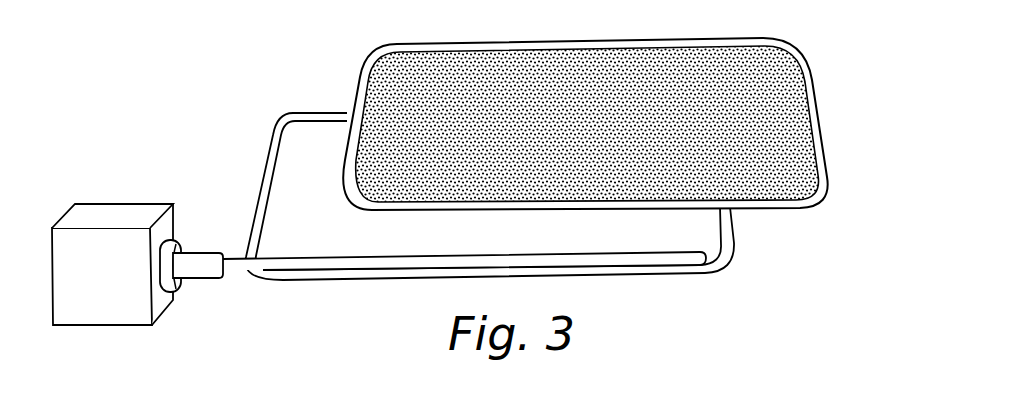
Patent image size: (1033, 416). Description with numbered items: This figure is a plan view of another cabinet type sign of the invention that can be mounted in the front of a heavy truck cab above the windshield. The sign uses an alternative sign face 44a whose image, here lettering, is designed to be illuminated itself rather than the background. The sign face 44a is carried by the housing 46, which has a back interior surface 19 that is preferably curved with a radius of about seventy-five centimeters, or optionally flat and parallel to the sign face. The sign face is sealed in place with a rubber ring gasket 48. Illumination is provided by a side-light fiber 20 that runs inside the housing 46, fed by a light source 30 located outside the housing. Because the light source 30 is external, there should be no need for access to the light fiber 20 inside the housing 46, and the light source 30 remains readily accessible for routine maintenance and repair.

The alternative sign face 44a is at (770, 57).
The back interior surface 19 is at (288, 153).
The housing 46 is at (292, 193).
The side-light fiber 20 is at (235, 257).
The light source 30 is at (100, 197).
The rubber ring gasket 48 is at (730, 258).